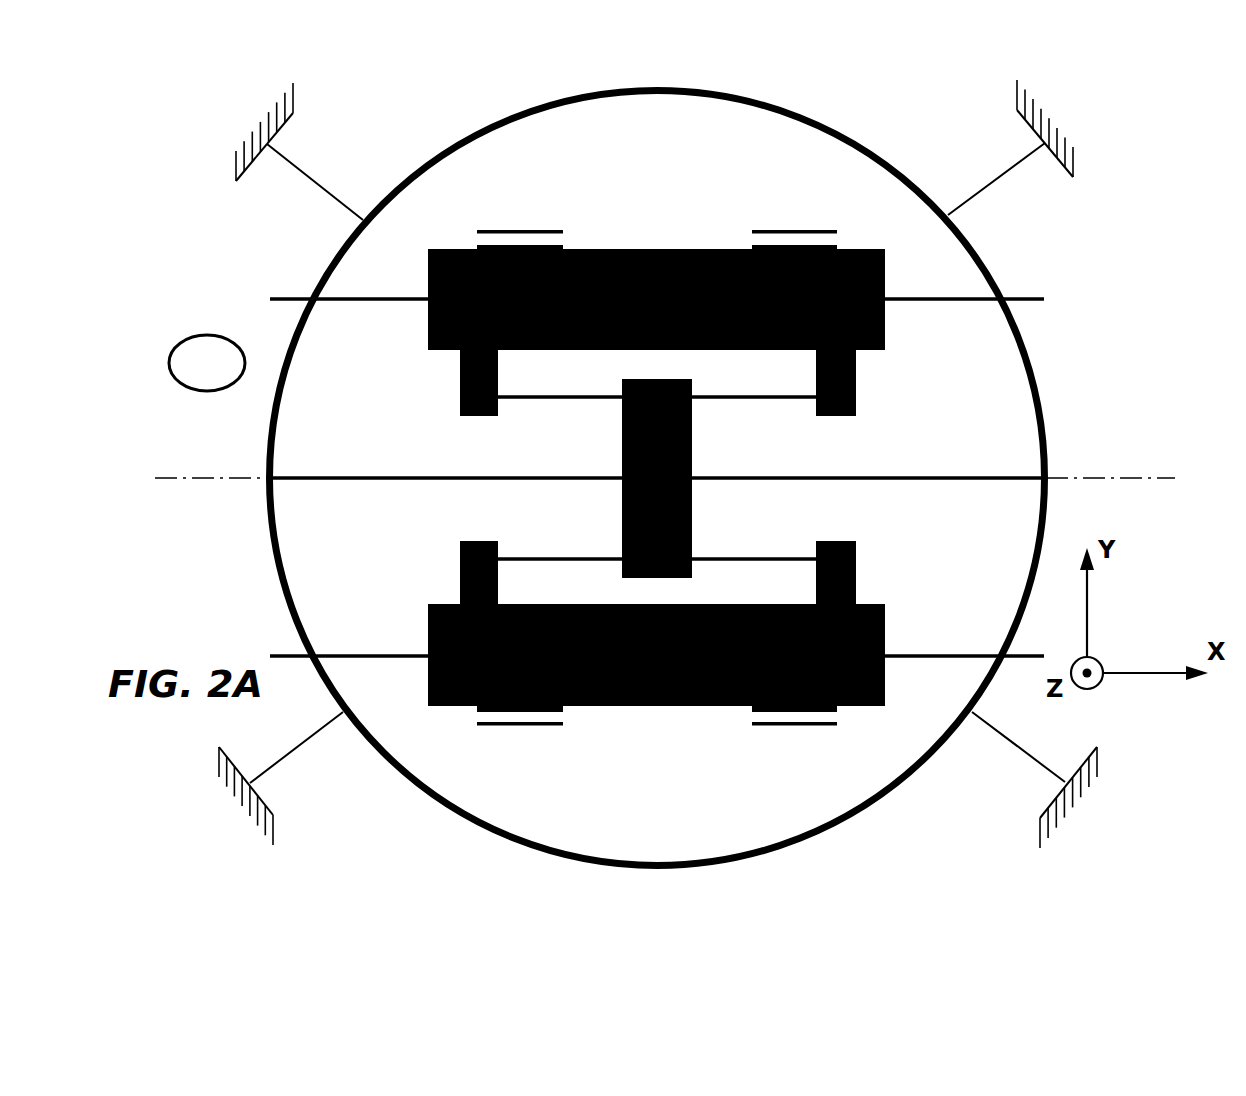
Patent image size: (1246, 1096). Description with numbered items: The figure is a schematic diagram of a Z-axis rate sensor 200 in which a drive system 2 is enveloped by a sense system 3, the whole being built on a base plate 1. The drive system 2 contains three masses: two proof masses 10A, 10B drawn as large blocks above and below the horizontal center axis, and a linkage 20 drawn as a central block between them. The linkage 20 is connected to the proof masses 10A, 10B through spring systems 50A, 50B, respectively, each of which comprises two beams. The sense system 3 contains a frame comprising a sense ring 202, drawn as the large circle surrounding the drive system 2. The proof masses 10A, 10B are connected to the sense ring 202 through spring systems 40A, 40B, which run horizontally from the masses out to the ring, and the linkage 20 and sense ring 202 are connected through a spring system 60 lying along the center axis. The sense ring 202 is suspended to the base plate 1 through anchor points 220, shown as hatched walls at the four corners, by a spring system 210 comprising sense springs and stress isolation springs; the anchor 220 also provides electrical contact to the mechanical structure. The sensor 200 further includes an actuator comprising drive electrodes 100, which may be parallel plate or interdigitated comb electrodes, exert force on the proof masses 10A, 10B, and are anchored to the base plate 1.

The base plate 1 is at (207, 363).
The drive system 2 is at (658, 205).
The sense system 3 is at (300, 238).
The proof mass 10A is at (500, 248).
The proof mass 10B is at (605, 707).
The linkage 20 is at (625, 510).
The spring system 40A is at (397, 303).
The spring system 40B is at (336, 648).
The spring system 50A is at (560, 400).
The spring system 50B is at (740, 555).
The spring system 60 is at (947, 482).
The drive electrodes 100 is at (786, 226).
The Z-axis rate sensor 200 is at (521, 86).
The sense ring 202 is at (800, 108).
The spring system 210 is at (1020, 160).
The anchor point 220 is at (1066, 124).